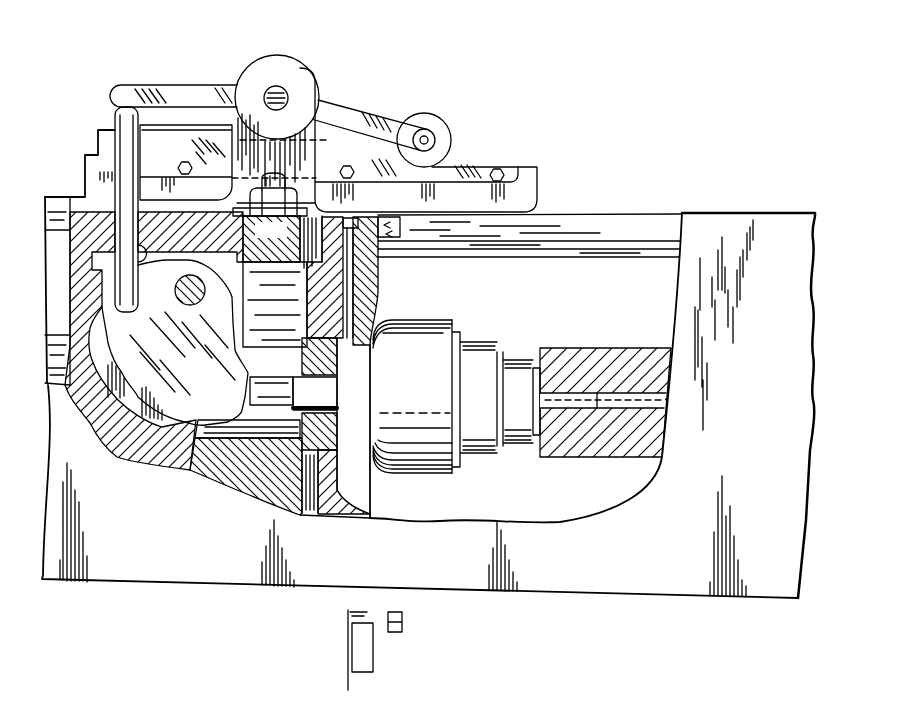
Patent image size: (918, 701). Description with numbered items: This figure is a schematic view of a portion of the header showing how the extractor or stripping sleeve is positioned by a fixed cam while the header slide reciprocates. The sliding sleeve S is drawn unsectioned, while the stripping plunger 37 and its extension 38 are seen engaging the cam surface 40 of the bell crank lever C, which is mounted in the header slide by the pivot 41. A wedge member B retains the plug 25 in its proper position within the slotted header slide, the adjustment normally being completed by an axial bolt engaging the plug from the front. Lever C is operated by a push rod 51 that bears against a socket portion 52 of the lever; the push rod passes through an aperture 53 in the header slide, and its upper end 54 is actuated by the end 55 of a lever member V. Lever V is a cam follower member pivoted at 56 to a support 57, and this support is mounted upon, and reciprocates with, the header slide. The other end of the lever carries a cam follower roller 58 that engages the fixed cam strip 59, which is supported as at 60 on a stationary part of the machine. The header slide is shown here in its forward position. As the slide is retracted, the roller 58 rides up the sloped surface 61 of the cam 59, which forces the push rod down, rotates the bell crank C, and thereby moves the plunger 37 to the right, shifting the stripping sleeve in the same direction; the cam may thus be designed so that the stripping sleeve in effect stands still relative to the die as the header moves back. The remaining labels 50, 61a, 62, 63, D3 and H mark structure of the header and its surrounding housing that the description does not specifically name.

The plug 25 is at (308, 434).
The plunger member 37 is at (315, 393).
The extension 38 is at (261, 380).
The cam surface 40 is at (237, 413).
The pivot 41 is at (208, 284).
The bolt 50 is at (256, 210).
The push rod 51 is at (134, 278).
The socket portion 52 is at (106, 351).
The aperture 53 is at (119, 258).
The upper end 54 is at (115, 113).
The end 55 is at (123, 84).
The pivot 56 is at (284, 89).
The support 57 is at (258, 56).
The cam follower roller 58 is at (443, 127).
The fixed cam strip 59 is at (481, 167).
The support 60 is at (536, 177).
The sloped surface 61 is at (325, 137).
The plate 61a is at (210, 125).
The guide rail 62 is at (563, 233).
The housing 63 is at (54, 389).
The wedge member B is at (253, 487).
The bell crank lever member C is at (218, 330).
The drive member D3 is at (592, 352).
The hub H is at (366, 254).
The sliding sleeve S is at (513, 391).
The lever member V is at (358, 100).